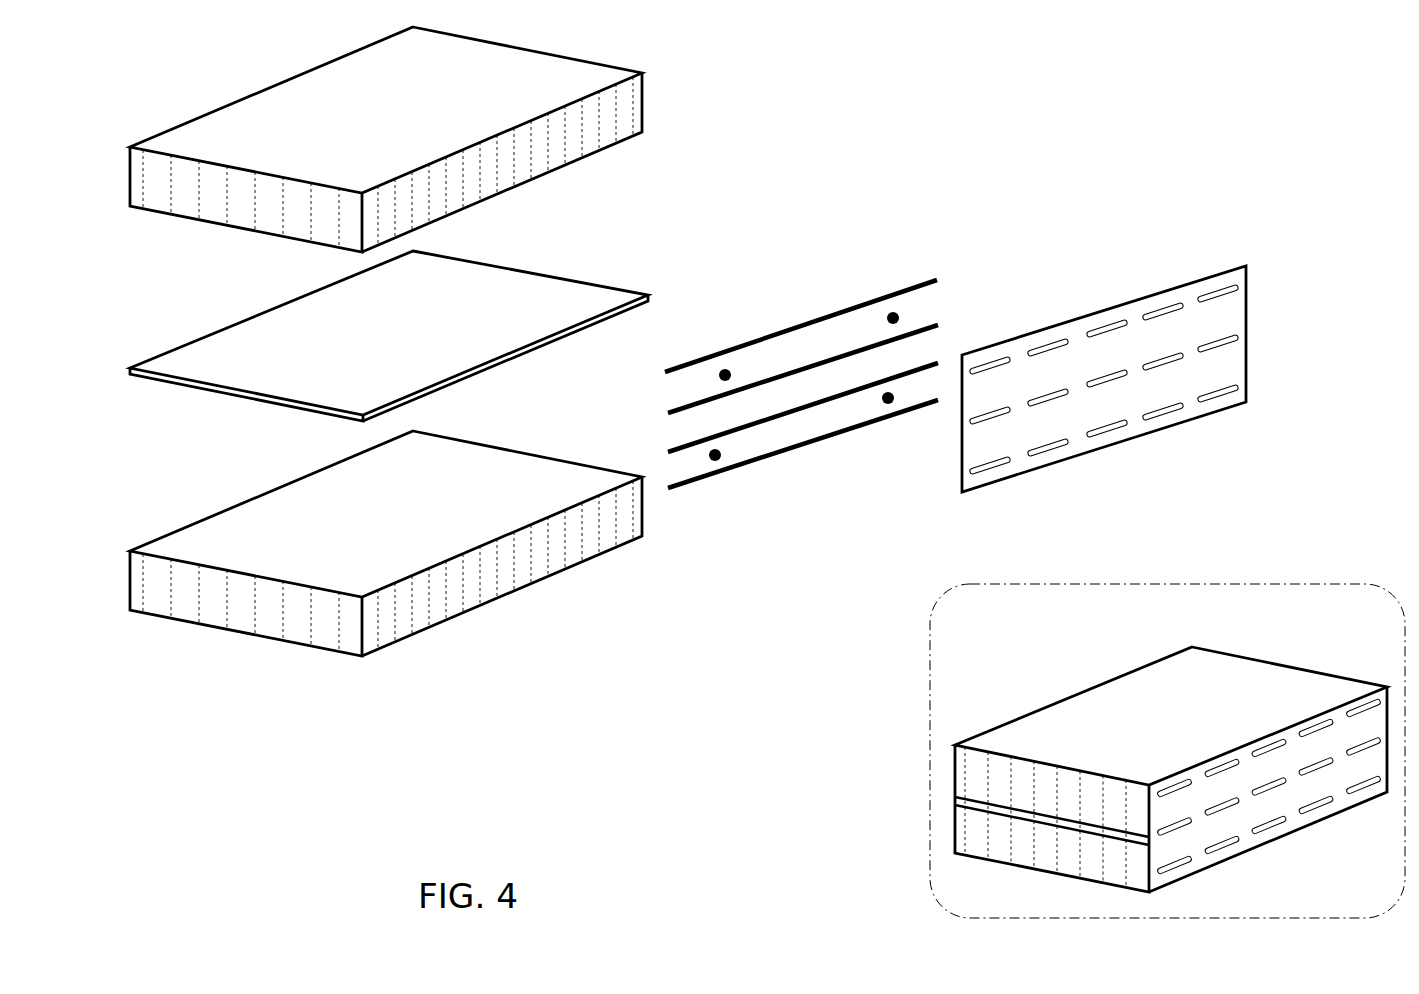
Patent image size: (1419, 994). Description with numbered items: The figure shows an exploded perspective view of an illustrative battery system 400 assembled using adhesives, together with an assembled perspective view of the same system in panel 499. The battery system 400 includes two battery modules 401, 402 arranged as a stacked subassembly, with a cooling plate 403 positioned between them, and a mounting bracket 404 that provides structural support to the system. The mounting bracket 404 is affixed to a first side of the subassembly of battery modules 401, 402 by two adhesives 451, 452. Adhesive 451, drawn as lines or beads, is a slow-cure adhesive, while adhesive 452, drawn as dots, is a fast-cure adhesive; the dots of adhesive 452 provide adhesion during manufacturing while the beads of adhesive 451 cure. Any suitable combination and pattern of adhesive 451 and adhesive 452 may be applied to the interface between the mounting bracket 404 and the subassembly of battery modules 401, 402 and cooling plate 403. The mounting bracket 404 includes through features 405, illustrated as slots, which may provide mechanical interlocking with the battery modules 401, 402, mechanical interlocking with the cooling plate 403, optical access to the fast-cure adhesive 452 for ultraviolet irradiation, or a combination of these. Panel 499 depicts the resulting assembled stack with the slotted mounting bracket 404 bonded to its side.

The battery system 400 is at (790, 60).
The battery module 401 is at (368, 125).
The battery module 402 is at (368, 530).
The cooling plate 403 is at (368, 345).
The mounting bracket 404 is at (1158, 339).
The through features 405 is at (1247, 278).
The adhesive 451 is at (938, 272).
The adhesive 452 is at (892, 312).
The panel 499 is at (1279, 635).